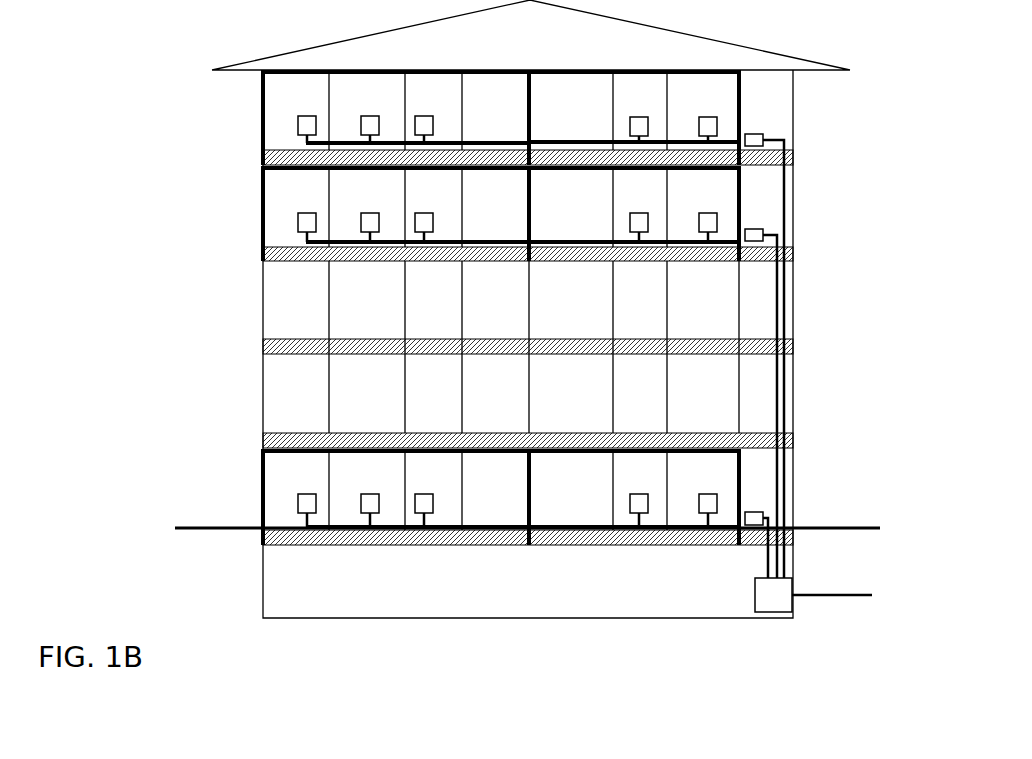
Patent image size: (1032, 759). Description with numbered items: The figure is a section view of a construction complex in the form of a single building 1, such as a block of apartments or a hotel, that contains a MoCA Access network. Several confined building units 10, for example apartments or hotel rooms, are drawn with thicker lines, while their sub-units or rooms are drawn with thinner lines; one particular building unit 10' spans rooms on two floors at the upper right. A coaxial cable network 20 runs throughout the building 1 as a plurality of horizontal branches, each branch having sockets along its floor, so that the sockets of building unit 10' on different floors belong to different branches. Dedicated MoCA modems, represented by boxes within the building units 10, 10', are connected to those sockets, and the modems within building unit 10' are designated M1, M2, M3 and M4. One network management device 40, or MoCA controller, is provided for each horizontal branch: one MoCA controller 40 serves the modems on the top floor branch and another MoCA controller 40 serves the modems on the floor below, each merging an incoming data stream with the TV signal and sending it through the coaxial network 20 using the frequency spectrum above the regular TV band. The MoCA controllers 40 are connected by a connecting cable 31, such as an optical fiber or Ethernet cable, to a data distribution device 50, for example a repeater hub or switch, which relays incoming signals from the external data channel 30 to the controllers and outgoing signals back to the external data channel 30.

The building 1 is at (190, 46).
The building unit 10 is at (507, 308).
The building unit 10' is at (691, 118).
The coaxial cable network 20 is at (557, 141).
The external data channel 30 is at (824, 595).
The connecting cable 31 is at (778, 302).
The network management device 40 is at (757, 133).
The data distribution device 50 is at (777, 595).
The MoCA modem M1 is at (647, 128).
The MoCA modem M2 is at (717, 128).
The MoCA modem M3 is at (647, 225).
The MoCA modem M4 is at (717, 225).